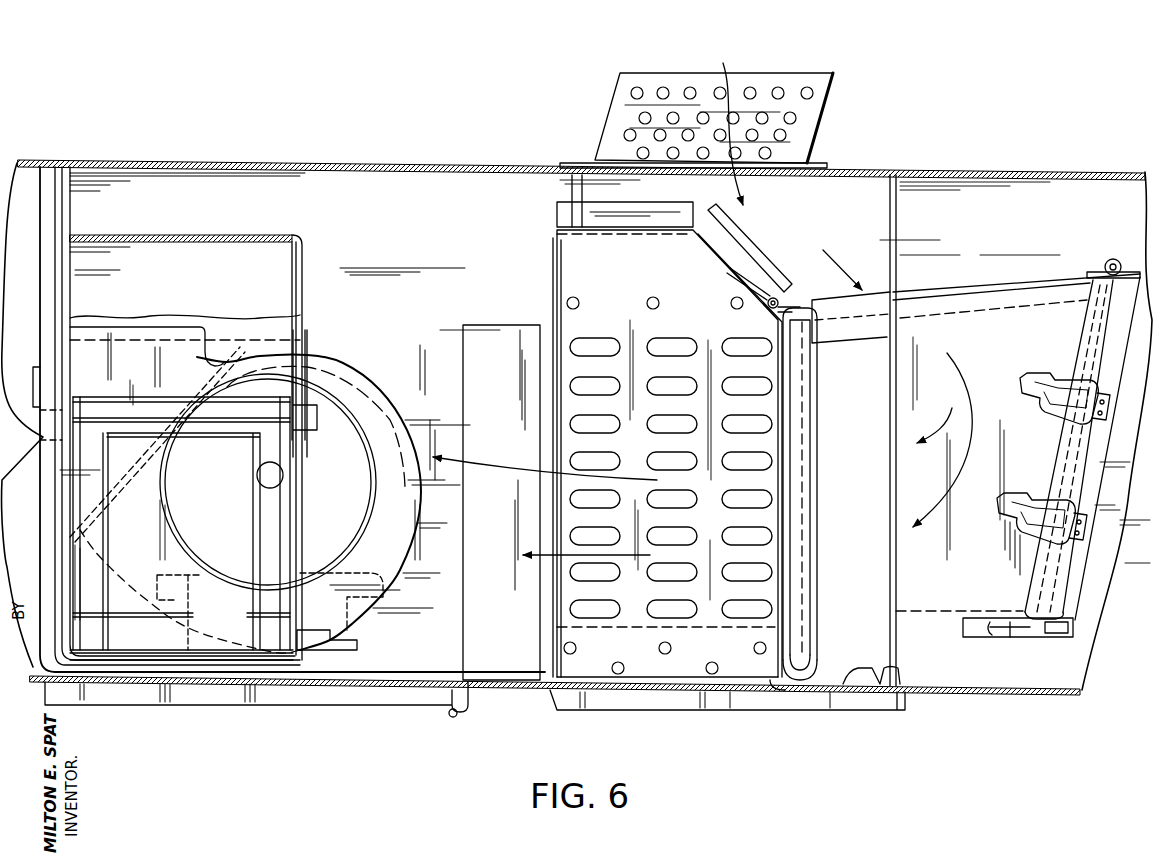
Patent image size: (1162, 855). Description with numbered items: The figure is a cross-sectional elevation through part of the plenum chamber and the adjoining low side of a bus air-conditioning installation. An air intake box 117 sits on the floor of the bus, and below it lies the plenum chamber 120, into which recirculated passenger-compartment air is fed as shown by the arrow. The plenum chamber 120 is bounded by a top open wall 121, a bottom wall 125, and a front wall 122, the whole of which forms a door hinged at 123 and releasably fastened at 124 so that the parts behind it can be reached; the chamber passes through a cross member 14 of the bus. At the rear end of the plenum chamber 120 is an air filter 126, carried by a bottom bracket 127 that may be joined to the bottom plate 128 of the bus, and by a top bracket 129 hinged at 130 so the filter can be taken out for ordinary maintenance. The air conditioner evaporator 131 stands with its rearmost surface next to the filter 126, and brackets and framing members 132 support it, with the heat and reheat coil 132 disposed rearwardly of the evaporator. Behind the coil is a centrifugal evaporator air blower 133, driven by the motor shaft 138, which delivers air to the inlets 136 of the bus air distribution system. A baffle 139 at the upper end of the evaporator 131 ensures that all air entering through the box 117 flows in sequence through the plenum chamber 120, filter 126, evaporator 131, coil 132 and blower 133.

The cross member 14 is at (898, 222).
The air intake box 117 is at (612, 93).
The plenum chamber 120 is at (962, 632).
The top open wall 121 is at (1003, 290).
The front wall 122 is at (1087, 455).
The hinge 123 is at (1115, 259).
The releasable fastener 124 is at (1050, 375).
The bottom wall 125 is at (918, 624).
The air filter 126 is at (797, 667).
The bottom bracket 127 is at (785, 688).
The bottom plate 128 is at (957, 692).
The top bracket 129 is at (807, 307).
The hinge 130 is at (757, 290).
The air conditioner evaporator 131 is at (577, 249).
The heat and reheat coil 132 is at (497, 312).
The centrifugal evaporator air blower 133 is at (368, 349).
The inlet 136 is at (244, 274).
The motor shaft 138 is at (260, 480).
The baffle 139 is at (568, 186).